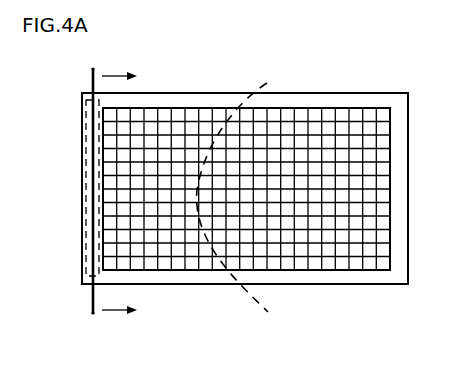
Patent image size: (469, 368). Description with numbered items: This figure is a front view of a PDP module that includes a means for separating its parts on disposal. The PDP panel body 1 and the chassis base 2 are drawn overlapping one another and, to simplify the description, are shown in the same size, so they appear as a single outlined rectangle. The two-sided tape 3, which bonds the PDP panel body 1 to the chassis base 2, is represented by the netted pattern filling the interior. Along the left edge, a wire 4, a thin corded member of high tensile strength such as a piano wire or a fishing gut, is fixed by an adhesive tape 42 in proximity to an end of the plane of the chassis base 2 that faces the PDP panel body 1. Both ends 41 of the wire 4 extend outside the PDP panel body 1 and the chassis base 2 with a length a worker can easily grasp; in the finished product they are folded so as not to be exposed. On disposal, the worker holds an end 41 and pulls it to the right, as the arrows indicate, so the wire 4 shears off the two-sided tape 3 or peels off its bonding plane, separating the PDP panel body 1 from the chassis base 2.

The PDP panel body 1 is at (408, 108).
The chassis base 2 is at (408, 190).
The two-sided tape 3 is at (366, 238).
The wire 4 is at (82, 148).
The end of the wire 41 is at (93, 78).
The adhesive tape 42 is at (90, 220).